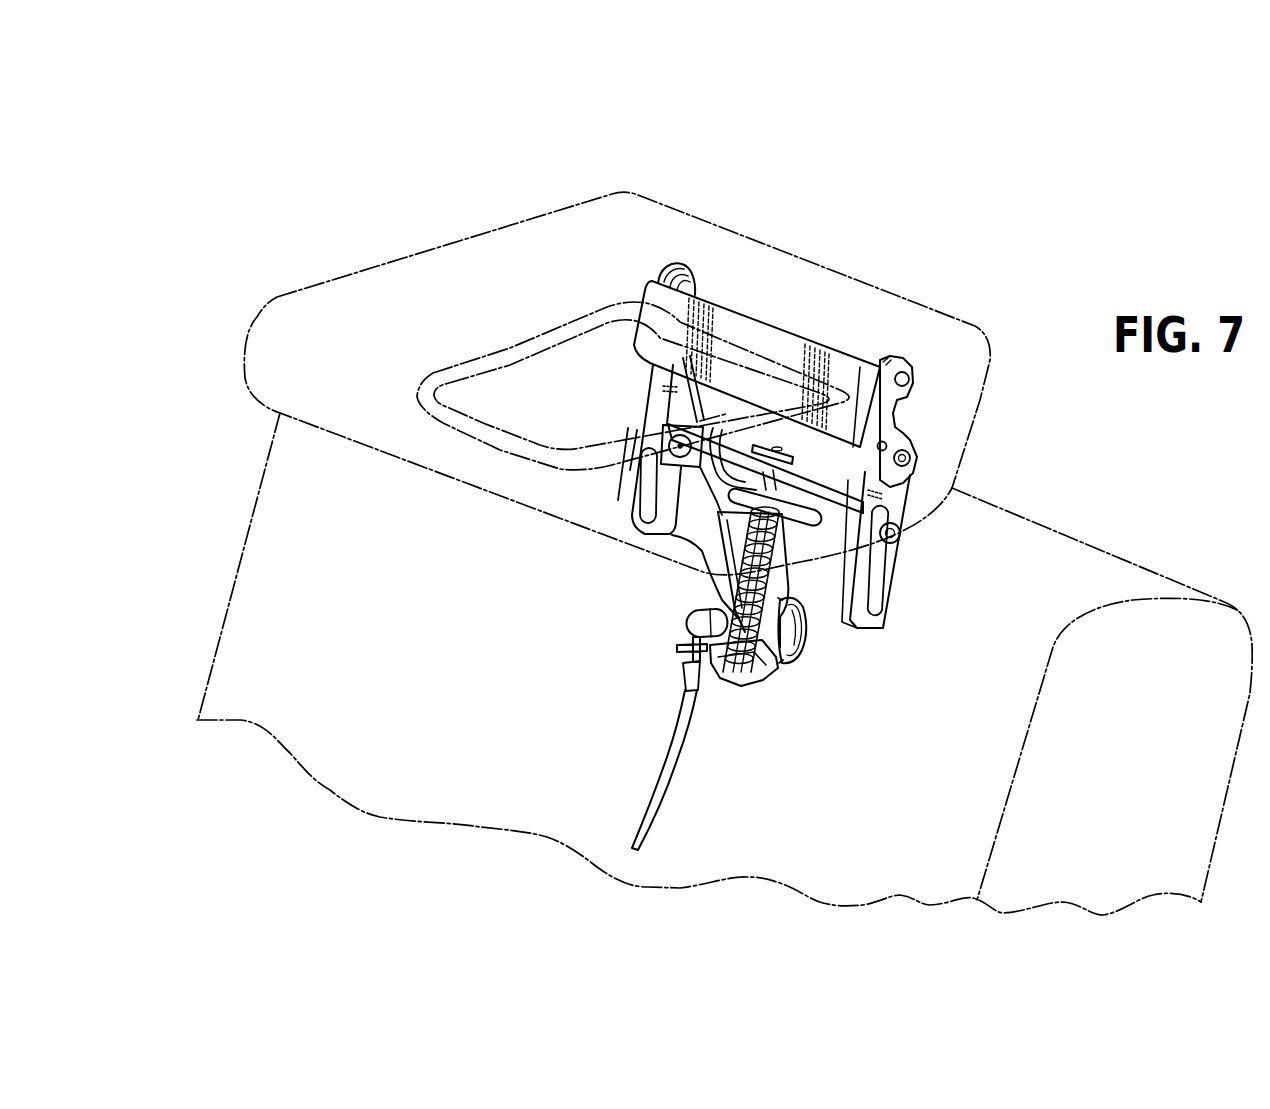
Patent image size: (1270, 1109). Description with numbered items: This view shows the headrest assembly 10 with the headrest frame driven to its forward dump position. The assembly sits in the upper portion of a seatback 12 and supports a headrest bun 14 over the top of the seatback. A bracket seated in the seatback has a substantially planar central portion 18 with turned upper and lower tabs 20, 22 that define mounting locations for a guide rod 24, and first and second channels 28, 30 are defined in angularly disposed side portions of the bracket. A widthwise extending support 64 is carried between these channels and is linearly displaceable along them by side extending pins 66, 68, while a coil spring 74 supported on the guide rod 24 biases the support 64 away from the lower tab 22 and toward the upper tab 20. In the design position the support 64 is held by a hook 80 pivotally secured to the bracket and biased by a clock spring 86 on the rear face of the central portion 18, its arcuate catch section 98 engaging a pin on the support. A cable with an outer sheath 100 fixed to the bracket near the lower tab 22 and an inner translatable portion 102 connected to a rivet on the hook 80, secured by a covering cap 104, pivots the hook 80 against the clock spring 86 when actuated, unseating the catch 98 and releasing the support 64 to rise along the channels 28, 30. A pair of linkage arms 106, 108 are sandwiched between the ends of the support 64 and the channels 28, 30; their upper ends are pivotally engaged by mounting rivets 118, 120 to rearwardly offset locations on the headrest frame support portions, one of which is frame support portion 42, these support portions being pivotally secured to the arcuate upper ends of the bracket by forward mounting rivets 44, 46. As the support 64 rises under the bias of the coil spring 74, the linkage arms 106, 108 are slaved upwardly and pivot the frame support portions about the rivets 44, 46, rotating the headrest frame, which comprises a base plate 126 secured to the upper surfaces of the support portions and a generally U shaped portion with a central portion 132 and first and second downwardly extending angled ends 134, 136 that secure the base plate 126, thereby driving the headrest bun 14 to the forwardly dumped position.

The headrest assembly 10 is at (389, 201).
The seatback 12 is at (262, 475).
The headrest bun 14 is at (268, 318).
The central portion 18 is at (652, 533).
The upper tab 20 is at (767, 445).
The lower tab 22 is at (732, 677).
The guide rod 24 is at (805, 512).
The first channel 28 is at (632, 498).
The second channel 30 is at (873, 590).
The headrest frame support portion 42 is at (909, 384).
The mounting rivet 44 is at (668, 400).
The mounting rivet 46 is at (888, 444).
The support 64 is at (668, 505).
The side extending pin 66 is at (647, 500).
The side extending pin 68 is at (903, 533).
The coil spring 74 is at (780, 673).
The hook 80 is at (712, 540).
The clock spring 86 is at (806, 622).
The arcuate catch section 98 is at (740, 560).
The outer sheath 100 is at (660, 760).
The inner translatable portion 102 is at (690, 632).
The covering cap 104 is at (697, 620).
The linkage arm 106 is at (660, 413).
The linkage arm 108 is at (878, 480).
The mounting rivet 118 is at (688, 282).
The mounting rivet 120 is at (880, 362).
The base plate 126 is at (780, 350).
The central portion 132 is at (510, 432).
The first downwardly extending angled end 134 is at (550, 330).
The second downwardly extending angled end 136 is at (713, 417).